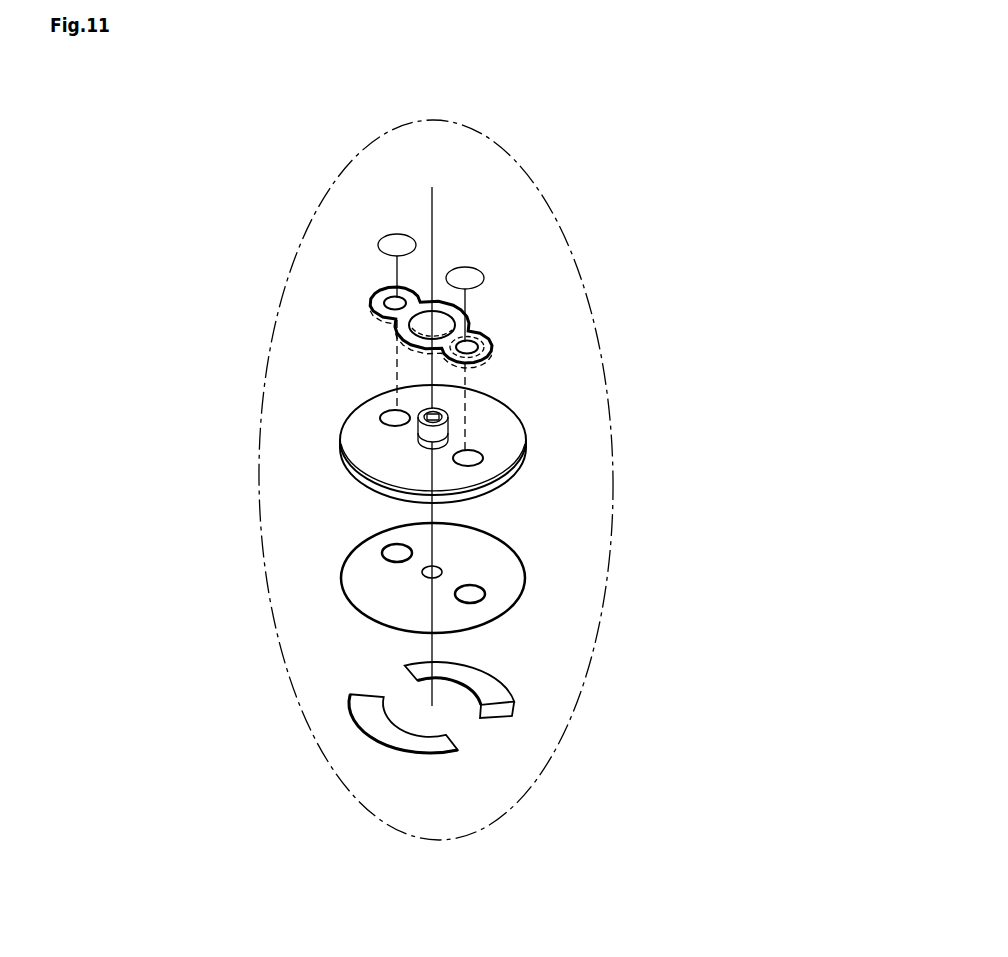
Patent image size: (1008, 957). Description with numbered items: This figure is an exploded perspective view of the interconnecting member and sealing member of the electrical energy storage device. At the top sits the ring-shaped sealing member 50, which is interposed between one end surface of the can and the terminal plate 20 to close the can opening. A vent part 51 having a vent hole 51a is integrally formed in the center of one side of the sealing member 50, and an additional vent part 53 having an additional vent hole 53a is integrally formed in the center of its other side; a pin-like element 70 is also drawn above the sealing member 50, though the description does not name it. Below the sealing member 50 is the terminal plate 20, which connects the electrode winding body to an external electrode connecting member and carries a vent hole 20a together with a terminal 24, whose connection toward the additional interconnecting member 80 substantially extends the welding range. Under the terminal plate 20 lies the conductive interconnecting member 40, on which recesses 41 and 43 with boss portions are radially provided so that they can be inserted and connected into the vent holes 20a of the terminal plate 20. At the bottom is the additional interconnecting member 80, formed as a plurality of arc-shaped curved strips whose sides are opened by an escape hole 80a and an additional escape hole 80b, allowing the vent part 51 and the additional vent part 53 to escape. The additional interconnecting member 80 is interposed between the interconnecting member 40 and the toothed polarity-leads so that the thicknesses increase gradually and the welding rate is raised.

The terminal plate 20 is at (343, 449).
The vent hole 20a is at (382, 415).
The terminal 24 is at (448, 428).
The interconnecting member 40 is at (342, 581).
The recess 41 is at (486, 591).
The recess 43 is at (388, 548).
The sealing member 50 is at (392, 337).
The vent part 51 is at (497, 353).
The vent hole 51a is at (485, 325).
The additional vent part 53 is at (375, 312).
The additional vent hole 53a is at (385, 297).
The pin 70 is at (457, 266).
The additional interconnecting member 80 is at (385, 728).
The escape hole 80a is at (480, 737).
The additional escape hole 80b is at (383, 672).